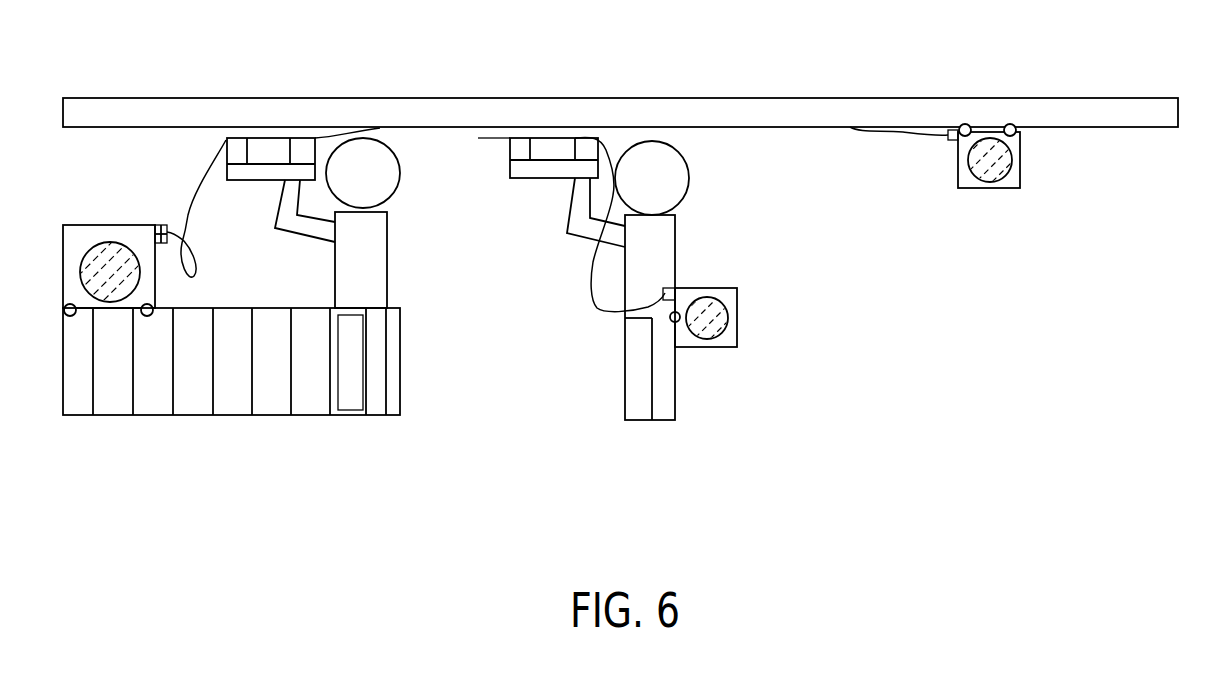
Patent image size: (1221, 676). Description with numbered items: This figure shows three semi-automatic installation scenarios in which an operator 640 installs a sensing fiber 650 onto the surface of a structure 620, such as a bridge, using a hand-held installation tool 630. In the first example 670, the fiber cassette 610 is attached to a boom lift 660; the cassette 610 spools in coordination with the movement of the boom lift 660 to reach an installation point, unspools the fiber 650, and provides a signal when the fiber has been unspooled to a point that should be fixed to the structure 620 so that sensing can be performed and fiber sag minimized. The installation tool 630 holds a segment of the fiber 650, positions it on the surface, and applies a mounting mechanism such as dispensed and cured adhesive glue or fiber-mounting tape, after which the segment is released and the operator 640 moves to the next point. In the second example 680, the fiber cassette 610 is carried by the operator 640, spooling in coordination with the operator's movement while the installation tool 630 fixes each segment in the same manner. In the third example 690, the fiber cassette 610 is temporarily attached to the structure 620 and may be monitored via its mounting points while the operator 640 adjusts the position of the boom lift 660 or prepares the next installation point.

The fiber cassette 610 is at (78, 238).
The structure 620 is at (110, 98).
The installation tool 630 is at (233, 155).
The operator 640 is at (375, 273).
The sensing fiber 650 is at (202, 190).
The boom lift 660 is at (208, 308).
The example 670 is at (256, 345).
The example 680 is at (706, 465).
The example 690 is at (926, 340).